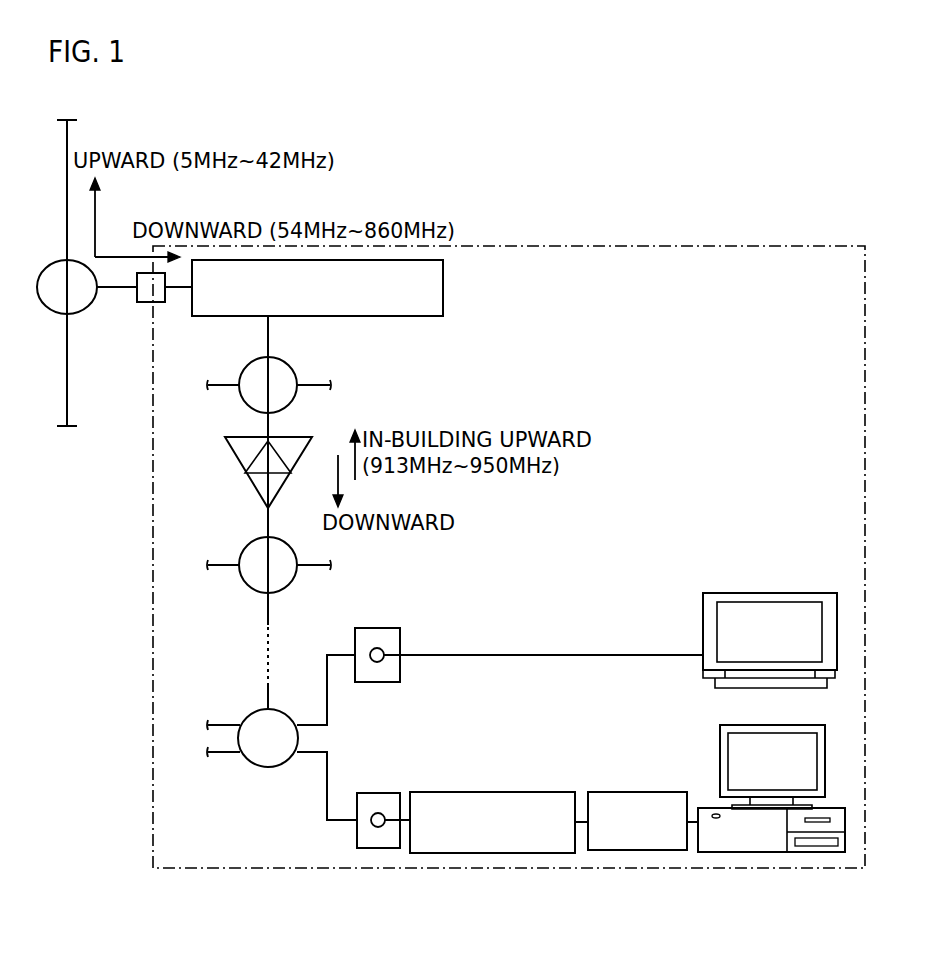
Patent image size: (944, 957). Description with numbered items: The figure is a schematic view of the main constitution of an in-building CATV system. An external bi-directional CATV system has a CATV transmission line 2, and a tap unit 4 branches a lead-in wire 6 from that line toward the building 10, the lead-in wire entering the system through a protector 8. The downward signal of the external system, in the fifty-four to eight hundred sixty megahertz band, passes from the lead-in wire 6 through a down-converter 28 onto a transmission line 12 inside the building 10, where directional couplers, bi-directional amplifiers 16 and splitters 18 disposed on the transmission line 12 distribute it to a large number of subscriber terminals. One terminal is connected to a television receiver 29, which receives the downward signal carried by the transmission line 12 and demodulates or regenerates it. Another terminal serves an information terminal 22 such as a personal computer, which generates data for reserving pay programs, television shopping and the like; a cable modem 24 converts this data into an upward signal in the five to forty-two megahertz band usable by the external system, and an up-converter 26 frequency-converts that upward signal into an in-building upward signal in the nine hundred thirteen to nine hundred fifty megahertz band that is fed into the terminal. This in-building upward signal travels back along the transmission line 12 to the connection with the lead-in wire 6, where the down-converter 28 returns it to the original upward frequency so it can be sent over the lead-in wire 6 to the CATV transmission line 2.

The CATV transmission line 2 is at (70, 124).
The tap unit 4 is at (55, 312).
The lead-in wire 6 is at (116, 292).
The protector 8 is at (160, 302).
The building 10 is at (625, 245).
The transmission line 12 is at (270, 335).
The bi-directional amplifier 16 is at (238, 455).
The splitter 18 is at (252, 722).
The information terminal 22 is at (720, 740).
The cable modem 24 is at (637, 792).
The up-converter 26 is at (470, 790).
The down-converter 28 is at (443, 280).
The television receiver 29 is at (713, 593).